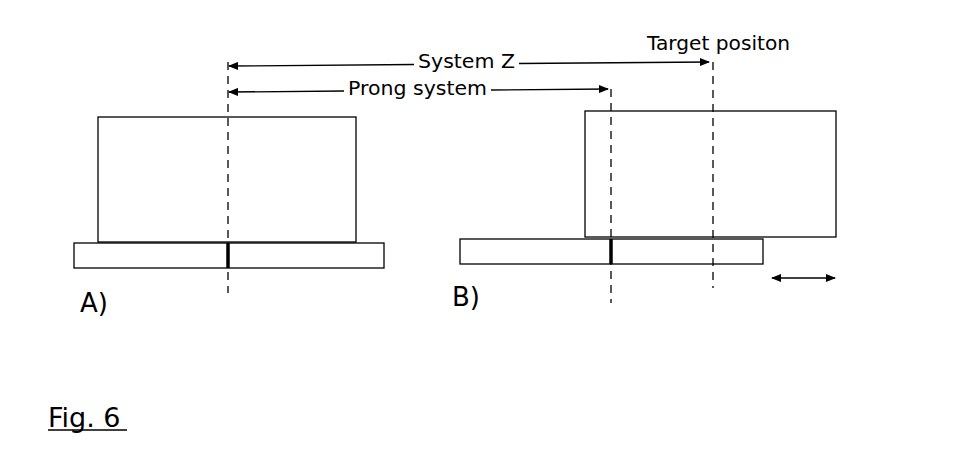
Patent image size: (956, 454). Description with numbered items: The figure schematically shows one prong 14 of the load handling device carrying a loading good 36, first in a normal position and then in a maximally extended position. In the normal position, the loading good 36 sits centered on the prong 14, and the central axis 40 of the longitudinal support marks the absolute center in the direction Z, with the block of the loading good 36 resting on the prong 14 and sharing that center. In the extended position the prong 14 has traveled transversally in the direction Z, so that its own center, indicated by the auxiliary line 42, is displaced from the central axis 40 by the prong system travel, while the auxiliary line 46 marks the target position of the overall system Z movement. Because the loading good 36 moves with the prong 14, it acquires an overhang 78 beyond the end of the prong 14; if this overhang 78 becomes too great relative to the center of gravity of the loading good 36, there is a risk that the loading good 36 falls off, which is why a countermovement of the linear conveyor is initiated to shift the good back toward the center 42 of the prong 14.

In FIG. 6A, the prong 14 is at (305, 265).
In FIG. 6B, the prong 14 is at (545, 265).
In FIG. 6A, the loading good 36 is at (357, 186).
In FIG. 6B, the loading good 36 is at (585, 172).
In FIG. 6A, the central axis 40 is at (230, 158).
In FIG. 6B, the auxiliary line 42 is at (613, 307).
In FIG. 6B, the auxiliary line 46 is at (713, 87).
In FIG. 6B, the overhang 78 is at (797, 283).